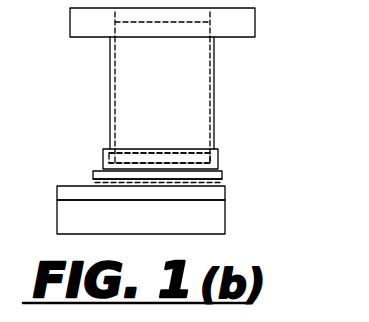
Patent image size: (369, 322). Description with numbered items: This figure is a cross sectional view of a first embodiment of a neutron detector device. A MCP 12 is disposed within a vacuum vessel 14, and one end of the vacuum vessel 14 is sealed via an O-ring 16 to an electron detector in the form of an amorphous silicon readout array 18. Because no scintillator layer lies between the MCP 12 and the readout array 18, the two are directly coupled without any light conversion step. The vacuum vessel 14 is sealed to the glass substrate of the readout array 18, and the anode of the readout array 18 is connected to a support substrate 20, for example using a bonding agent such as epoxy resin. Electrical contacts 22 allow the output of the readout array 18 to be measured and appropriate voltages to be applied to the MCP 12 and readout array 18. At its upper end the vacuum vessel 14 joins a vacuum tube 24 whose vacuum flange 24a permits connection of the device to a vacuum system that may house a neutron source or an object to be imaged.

The MCP 12 is at (157, 149).
The vacuum vessel 14 is at (218, 160).
The O-ring 16 is at (98, 176).
The amorphous silicon readout array 18 is at (215, 193).
The support substrate 20 is at (213, 216).
The electrical contacts 22 is at (77, 183).
The vacuum tube 24 is at (214, 82).
The vacuum flange 24a is at (240, 6).